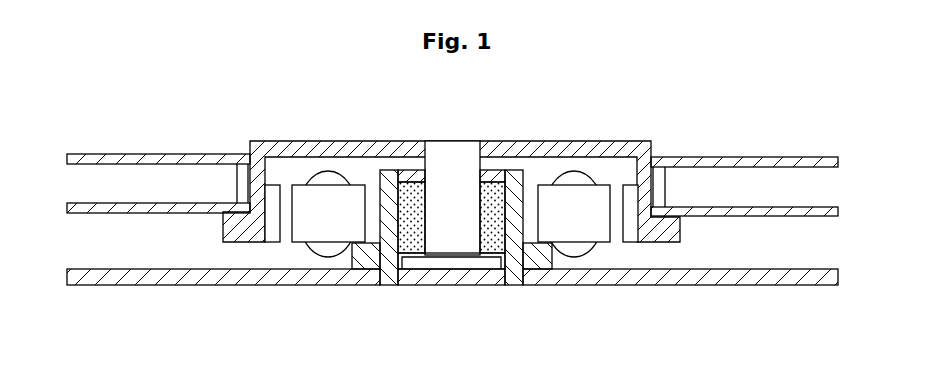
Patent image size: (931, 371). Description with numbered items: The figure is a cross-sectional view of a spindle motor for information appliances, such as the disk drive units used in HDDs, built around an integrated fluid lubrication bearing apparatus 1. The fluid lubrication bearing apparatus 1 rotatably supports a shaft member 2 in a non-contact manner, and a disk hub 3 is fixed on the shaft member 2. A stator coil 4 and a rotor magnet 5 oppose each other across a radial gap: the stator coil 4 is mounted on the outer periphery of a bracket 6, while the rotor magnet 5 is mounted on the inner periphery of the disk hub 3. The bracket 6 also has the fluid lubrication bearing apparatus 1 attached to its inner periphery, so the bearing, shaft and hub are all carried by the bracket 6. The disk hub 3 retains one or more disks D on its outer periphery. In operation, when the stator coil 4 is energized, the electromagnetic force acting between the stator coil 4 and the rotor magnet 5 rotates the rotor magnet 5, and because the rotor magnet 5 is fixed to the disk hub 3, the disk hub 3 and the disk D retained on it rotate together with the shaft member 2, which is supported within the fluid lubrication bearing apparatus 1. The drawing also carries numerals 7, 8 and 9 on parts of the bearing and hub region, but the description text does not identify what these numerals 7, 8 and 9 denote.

The fluid lubrication bearing apparatus 1 is at (451, 207).
The shaft member 2 is at (459, 140).
The disk hub 3 is at (630, 150).
The stator coil 4 is at (600, 233).
The rotor magnet 5 is at (632, 235).
The bracket 6 is at (542, 273).
The holder 7 is at (387, 172).
The elastic member 8 is at (490, 186).
The seal member 9 is at (405, 172).
The disk D is at (764, 157).